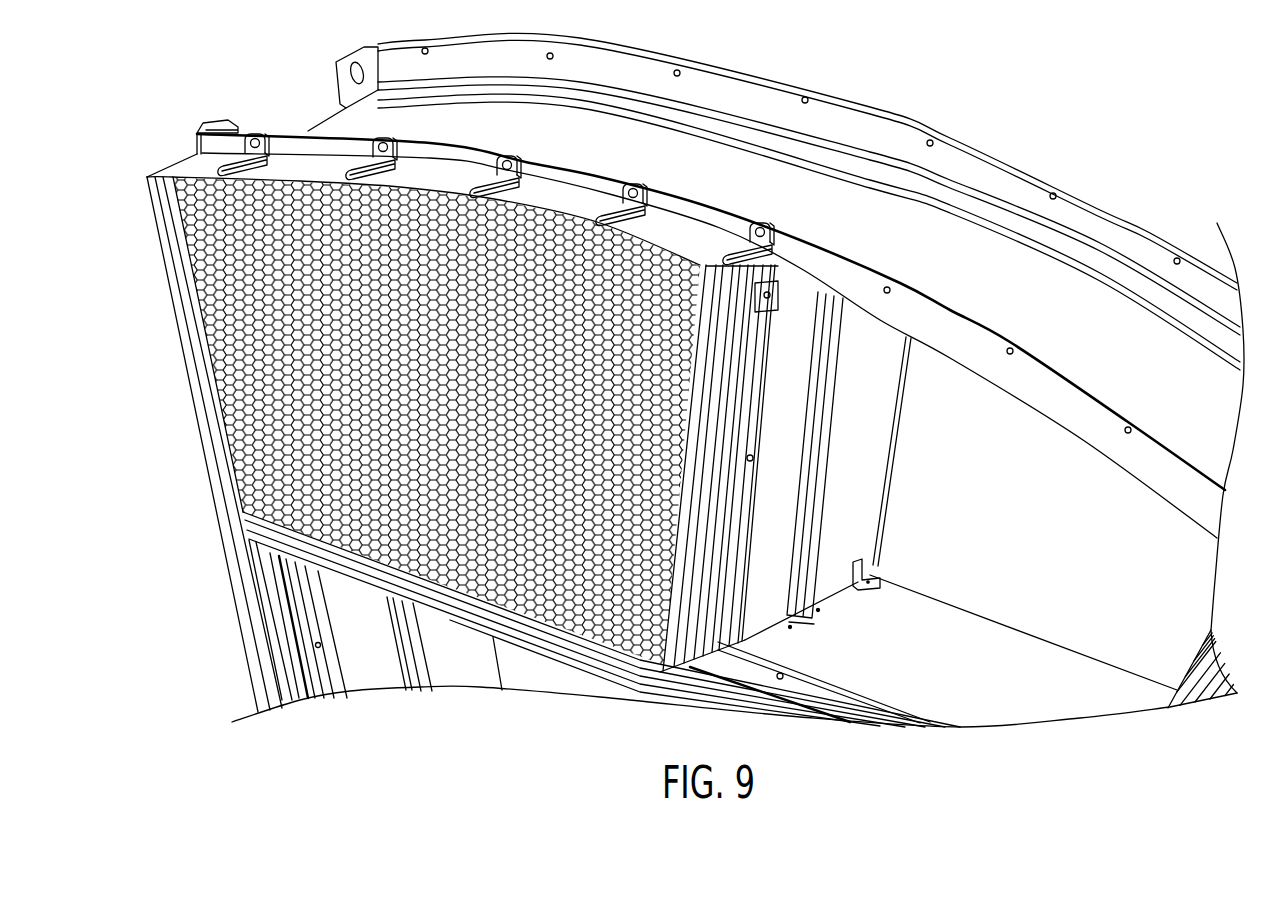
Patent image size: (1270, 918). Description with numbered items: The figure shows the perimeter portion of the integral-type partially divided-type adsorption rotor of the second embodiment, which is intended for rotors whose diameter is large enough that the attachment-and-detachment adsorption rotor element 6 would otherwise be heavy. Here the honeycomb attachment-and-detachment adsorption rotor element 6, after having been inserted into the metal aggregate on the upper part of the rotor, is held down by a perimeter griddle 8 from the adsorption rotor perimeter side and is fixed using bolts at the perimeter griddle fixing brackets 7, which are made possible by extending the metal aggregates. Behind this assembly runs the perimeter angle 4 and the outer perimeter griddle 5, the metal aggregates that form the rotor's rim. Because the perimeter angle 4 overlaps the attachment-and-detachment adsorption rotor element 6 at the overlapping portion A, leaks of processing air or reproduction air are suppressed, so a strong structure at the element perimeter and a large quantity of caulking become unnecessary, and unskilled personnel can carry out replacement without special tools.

The perimeter angle 4 is at (707, 205).
The perimeter griddle 5 is at (707, 155).
The attachment-and-detachment adsorption rotor element 6 is at (453, 404).
The perimeter griddle fixing bracket 7 is at (529, 158).
The perimeter griddle 8 is at (558, 193).
The overlapping portion A is at (765, 276).